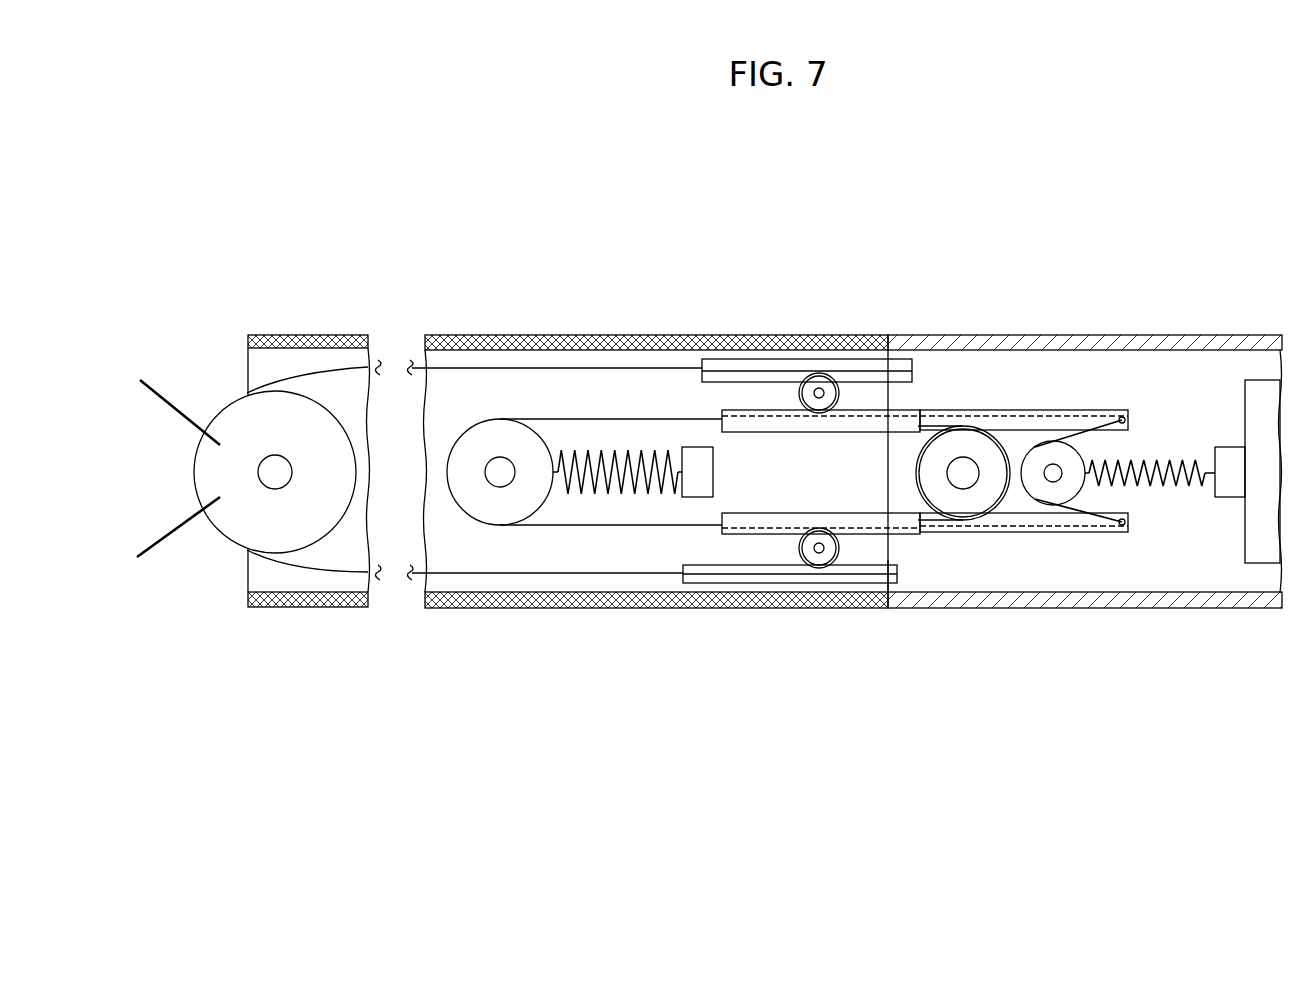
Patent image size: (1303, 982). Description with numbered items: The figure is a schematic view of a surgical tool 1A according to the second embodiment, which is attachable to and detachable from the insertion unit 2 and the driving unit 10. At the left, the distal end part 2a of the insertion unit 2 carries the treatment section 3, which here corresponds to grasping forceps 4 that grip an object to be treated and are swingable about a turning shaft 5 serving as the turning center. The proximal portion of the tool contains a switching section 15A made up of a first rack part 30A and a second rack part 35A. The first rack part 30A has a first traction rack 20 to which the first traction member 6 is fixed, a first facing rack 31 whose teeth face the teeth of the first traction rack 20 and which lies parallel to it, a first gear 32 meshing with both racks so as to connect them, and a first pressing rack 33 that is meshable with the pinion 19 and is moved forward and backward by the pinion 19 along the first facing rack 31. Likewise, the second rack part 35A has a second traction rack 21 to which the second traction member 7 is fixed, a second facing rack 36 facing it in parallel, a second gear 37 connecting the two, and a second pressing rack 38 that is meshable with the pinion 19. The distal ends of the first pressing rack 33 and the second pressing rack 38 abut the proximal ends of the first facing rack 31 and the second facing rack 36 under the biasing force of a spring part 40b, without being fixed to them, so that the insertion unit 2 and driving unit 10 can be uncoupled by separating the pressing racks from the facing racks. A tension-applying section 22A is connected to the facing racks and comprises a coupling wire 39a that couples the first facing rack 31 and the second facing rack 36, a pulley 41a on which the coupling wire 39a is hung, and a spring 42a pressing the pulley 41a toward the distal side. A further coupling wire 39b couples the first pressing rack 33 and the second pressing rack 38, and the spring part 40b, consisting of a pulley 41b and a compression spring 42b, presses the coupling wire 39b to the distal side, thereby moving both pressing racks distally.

The surgical tool 1A is at (1250, 297).
The insertion unit 2 is at (767, 322).
The distal end part 2a is at (327, 322).
The treatment section 3 is at (270, 367).
The grasping forceps 4 is at (121, 382).
The turning shaft 5 is at (232, 527).
The first traction member 6 is at (676, 365).
The second traction member 7 is at (653, 575).
The driving unit 10 is at (1195, 320).
The switching section 15A is at (1010, 495).
The pinion 19 is at (963, 437).
The first traction rack 20 is at (905, 360).
The second traction rack 21 is at (730, 583).
The tension-applying section 22A is at (582, 290).
The first rack part 30A is at (857, 350).
The first facing rack 31 is at (765, 425).
The first gear 32 is at (815, 376).
The first pressing rack 33 is at (993, 412).
The second rack part 35A is at (855, 592).
The second facing rack 36 is at (855, 515).
The second gear 37 is at (840, 546).
The second pressing rack 38 is at (963, 528).
The coupling wire 39a is at (582, 527).
The coupling wire 39b is at (1085, 503).
The spring part 40b is at (1167, 288).
The pulley 41a is at (485, 430).
The pulley 41b is at (1068, 455).
The spring 42a is at (597, 447).
The compression spring 42b is at (1157, 453).